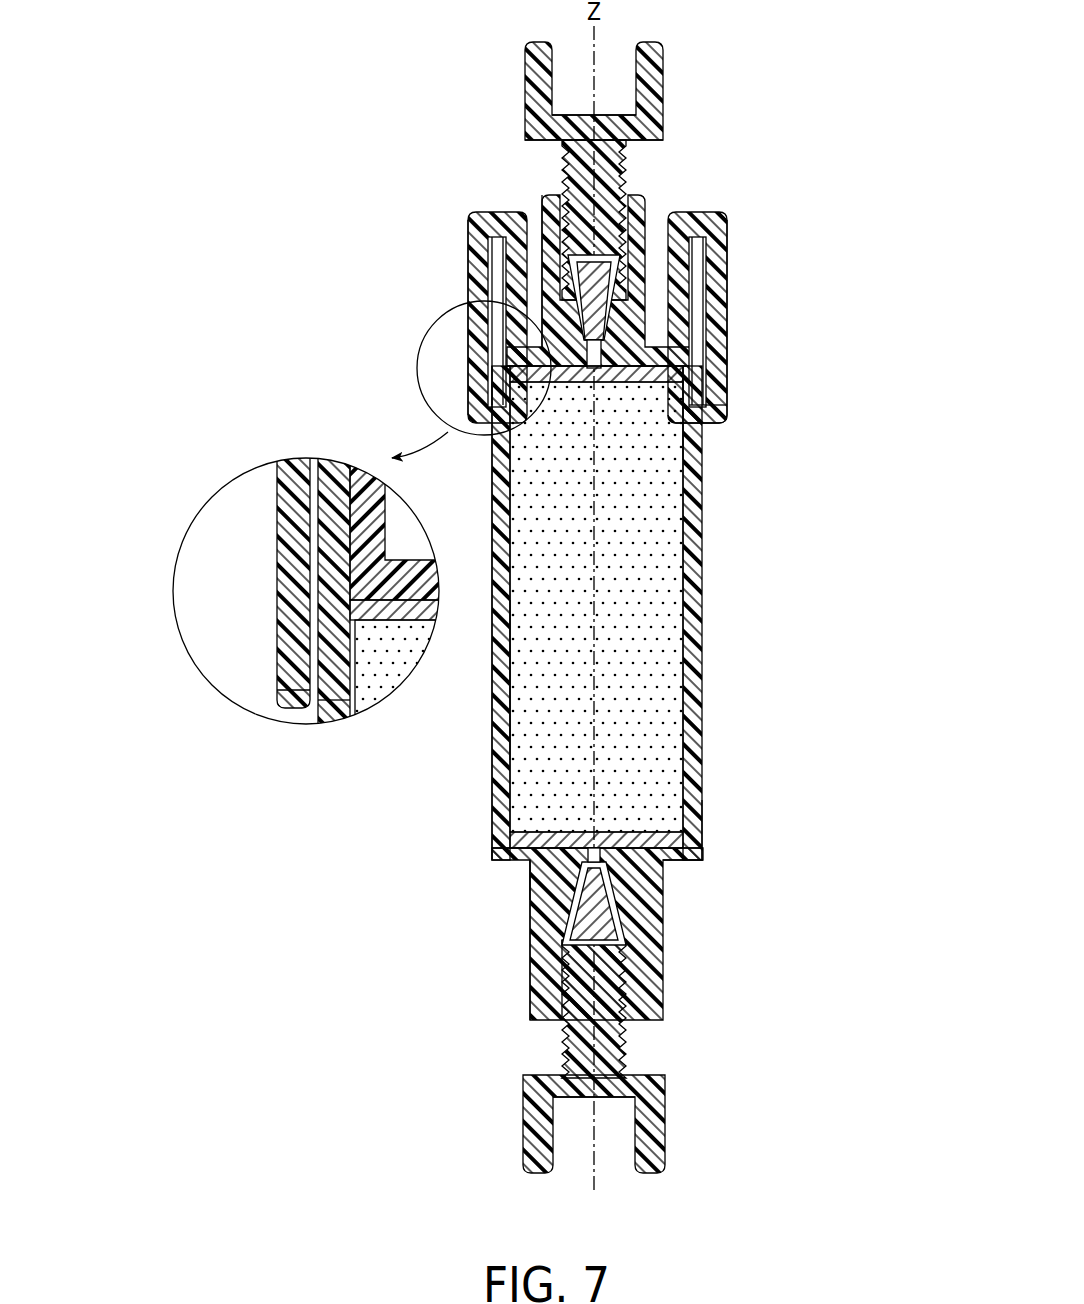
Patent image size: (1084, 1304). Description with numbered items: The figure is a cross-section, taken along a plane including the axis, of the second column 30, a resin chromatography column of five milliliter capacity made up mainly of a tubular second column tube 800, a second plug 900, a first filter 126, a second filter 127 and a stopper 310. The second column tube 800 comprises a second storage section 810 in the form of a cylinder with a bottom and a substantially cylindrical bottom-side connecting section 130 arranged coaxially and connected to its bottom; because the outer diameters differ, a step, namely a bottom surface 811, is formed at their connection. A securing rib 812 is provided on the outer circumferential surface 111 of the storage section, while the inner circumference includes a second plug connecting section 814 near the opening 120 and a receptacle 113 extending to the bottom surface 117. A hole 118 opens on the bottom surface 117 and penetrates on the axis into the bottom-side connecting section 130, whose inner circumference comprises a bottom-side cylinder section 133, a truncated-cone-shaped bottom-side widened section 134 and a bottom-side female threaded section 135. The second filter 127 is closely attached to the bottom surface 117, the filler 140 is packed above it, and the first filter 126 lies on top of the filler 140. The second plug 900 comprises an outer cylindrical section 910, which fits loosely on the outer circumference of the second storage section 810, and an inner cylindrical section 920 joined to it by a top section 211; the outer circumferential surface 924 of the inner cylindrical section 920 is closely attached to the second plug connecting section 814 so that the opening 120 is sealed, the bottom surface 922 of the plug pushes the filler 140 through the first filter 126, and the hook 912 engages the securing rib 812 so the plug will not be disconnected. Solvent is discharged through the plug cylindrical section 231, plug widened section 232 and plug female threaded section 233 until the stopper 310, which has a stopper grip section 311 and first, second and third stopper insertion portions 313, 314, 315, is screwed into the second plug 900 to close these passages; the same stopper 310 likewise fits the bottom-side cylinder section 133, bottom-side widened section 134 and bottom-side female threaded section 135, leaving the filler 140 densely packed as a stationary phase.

The second column 30 is at (800, 130).
The stopper 310 is at (672, 68).
The stopper grip section 311 is at (668, 100).
The first stopper insertion portion 313 is at (628, 170).
The second stopper insertion portion 314 is at (708, 305).
The third stopper insertion portion 315 is at (712, 372).
The opening 120 is at (690, 213).
The top section 211 is at (503, 212).
The plug female threaded section 233 is at (562, 152).
The plug cylindrical section 231 is at (500, 385).
The plug widened section 232 is at (488, 280).
The second plug connecting section 814 is at (468, 220).
The outer circumferential surface 924 is at (728, 257).
The outer cylindrical section 910 is at (465, 263).
The second plug 900 is at (730, 275).
The inner cylindrical section 920 is at (490, 350).
The securing rib 812 is at (714, 418).
The hook 912 is at (706, 432).
The bottom surface 922 is at (700, 450).
The first filter 126 is at (665, 395).
The second filter 127 is at (660, 822).
The outer circumferential surface 111 is at (704, 540).
The filler 140 is at (660, 585).
The second storage section 810 is at (629, 613).
The second column tube 800 is at (470, 552).
The receptacle 113 is at (520, 700).
The bottom surface 117 is at (703, 830).
The hole 118 is at (690, 880).
The bottom surface 811 is at (705, 856).
The bottom-side connecting section 130 is at (665, 965).
The bottom-side cylinder section 133 is at (575, 905).
The bottom-side widened section 134 is at (605, 900).
The bottom-side female threaded section 135 is at (570, 1012).